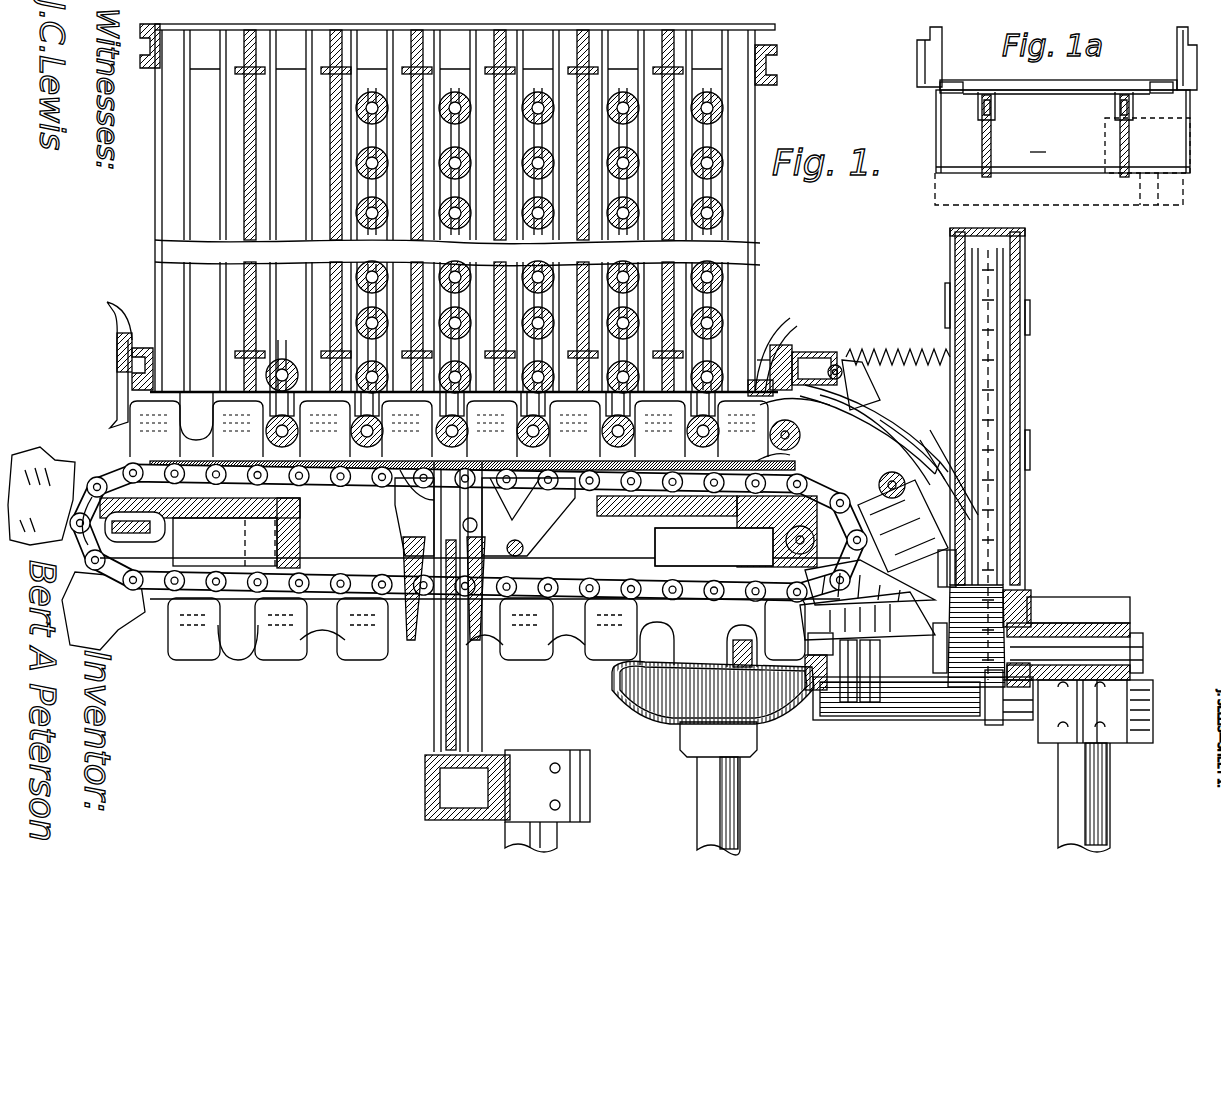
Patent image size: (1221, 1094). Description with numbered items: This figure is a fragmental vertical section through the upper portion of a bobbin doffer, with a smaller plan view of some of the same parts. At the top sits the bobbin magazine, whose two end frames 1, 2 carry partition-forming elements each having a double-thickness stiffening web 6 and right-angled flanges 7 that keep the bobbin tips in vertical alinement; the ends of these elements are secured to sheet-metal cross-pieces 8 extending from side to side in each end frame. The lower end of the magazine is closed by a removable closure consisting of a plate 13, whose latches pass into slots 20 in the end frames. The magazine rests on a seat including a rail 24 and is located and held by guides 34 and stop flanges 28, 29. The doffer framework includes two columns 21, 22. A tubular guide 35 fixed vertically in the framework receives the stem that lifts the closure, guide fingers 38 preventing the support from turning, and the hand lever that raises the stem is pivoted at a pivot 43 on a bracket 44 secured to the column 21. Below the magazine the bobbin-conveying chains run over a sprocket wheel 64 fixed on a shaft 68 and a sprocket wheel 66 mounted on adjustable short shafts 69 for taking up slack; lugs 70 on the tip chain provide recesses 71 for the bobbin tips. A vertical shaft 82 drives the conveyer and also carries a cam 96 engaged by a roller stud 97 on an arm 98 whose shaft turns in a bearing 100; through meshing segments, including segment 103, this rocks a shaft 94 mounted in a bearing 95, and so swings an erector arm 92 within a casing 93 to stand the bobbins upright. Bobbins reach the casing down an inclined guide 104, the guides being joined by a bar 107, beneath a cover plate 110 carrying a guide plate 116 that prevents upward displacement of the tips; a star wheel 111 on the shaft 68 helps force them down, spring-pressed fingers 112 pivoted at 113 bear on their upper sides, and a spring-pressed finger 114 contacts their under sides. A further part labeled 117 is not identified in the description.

In FIG. 1, the end frame 1 is at (776, 48).
In FIG. 1, the end frame 2 is at (757, 390).
In FIG. 1, the stiffening web 6 is at (652, 147).
In FIG. 1, the flanges 7 is at (392, 140).
In FIG. 1, the cross-pieces 8 is at (338, 74).
In FIG. 1, the plate 13 is at (215, 460).
In FIG. 1, the slots 20 is at (150, 41).
In FIG. 1, the column 21 is at (548, 845).
In FIG. 1, the column 22 is at (1062, 832).
In FIG. 1A, the rail 24 is at (930, 32).
In FIG. 1, the stop flange 28 is at (117, 348).
In FIG. 1A, the stop flange 29 is at (1088, 85).
In FIG. 1, the guides 34 is at (107, 303).
In FIG. 1, the tubular guide 35 is at (436, 660).
In FIG. 1, the guide fingers 38 is at (260, 545).
In FIG. 1, the pivot 43 is at (446, 784).
In FIG. 1, the bracket 44 is at (488, 750).
In FIG. 1, the sprocket wheel 64 is at (867, 556).
In FIG. 1, the sprocket wheel 66 is at (112, 464).
In FIG. 1, the shaft 68 is at (785, 538).
In FIG. 1, the short shafts 69 is at (82, 552).
In FIG. 1, the lugs 70 is at (60, 455).
In FIG. 1, the recesses 71 is at (200, 410).
In FIG. 1, the vertical shaft 82 is at (738, 824).
In FIG. 1, the erector arm 92 is at (990, 440).
In FIG. 1, the casing 93 is at (962, 228).
In FIG. 1A, the casing 93 is at (1102, 206).
In FIG. 1, the shaft 94 is at (1082, 652).
In FIG. 1, the bearing 95 is at (1060, 622).
In FIG. 1, the cam 96 is at (662, 712).
In FIG. 1, the roller stud 97 is at (817, 692).
In FIG. 1, the arm 98 is at (860, 705).
In FIG. 1, the bearing 100 is at (968, 721).
In FIG. 1, the segment 103 is at (795, 426).
In FIG. 1, the inclined guide 104 is at (960, 495).
In FIG. 1, the bar 107 is at (950, 565).
In FIG. 1, the cover plate 110 is at (925, 425).
In FIG. 1A, the cover plate 110 is at (1076, 107).
In FIG. 1, the star wheel 111 is at (885, 415).
In FIG. 1, the spring-pressed fingers 112 is at (850, 395).
In FIG. 1A, the spring-pressed fingers 112 is at (992, 127).
In FIG. 1, the pivot 113 is at (836, 360).
In FIG. 1A, the pivot 113 is at (985, 111).
In FIG. 1, the spring-pressed finger 114 is at (952, 508).
In FIG. 1, the guide plate 116 is at (935, 462).
In FIG. 1A, the guide plate 116 is at (1106, 149).
In FIG. 1A, the plate 117 is at (1133, 131).